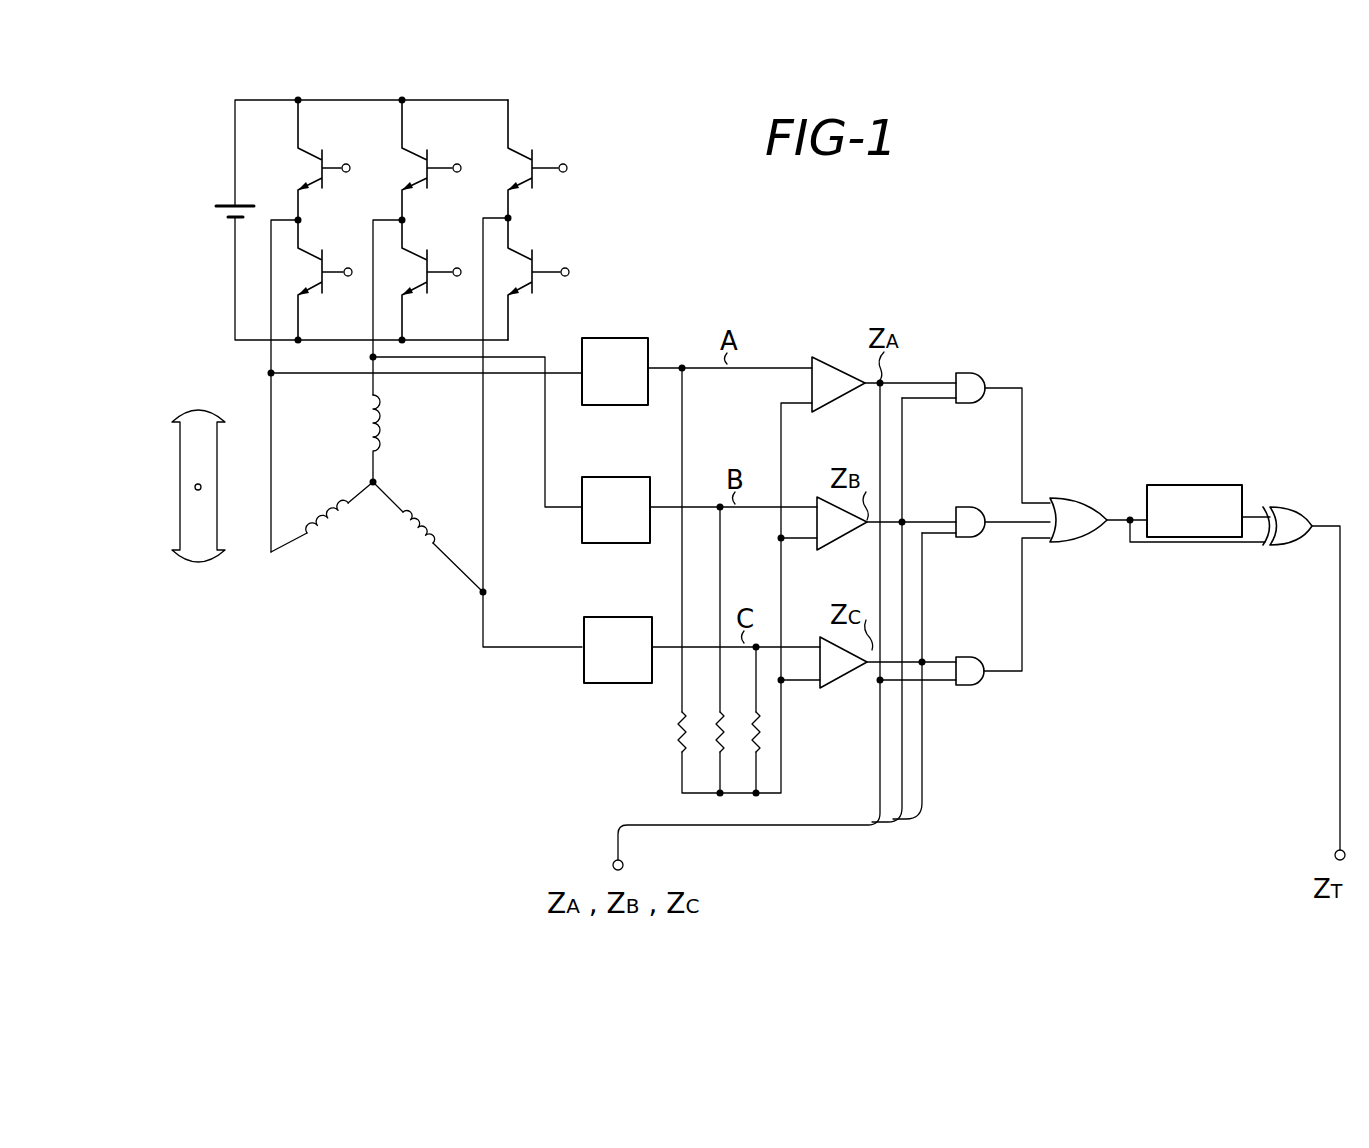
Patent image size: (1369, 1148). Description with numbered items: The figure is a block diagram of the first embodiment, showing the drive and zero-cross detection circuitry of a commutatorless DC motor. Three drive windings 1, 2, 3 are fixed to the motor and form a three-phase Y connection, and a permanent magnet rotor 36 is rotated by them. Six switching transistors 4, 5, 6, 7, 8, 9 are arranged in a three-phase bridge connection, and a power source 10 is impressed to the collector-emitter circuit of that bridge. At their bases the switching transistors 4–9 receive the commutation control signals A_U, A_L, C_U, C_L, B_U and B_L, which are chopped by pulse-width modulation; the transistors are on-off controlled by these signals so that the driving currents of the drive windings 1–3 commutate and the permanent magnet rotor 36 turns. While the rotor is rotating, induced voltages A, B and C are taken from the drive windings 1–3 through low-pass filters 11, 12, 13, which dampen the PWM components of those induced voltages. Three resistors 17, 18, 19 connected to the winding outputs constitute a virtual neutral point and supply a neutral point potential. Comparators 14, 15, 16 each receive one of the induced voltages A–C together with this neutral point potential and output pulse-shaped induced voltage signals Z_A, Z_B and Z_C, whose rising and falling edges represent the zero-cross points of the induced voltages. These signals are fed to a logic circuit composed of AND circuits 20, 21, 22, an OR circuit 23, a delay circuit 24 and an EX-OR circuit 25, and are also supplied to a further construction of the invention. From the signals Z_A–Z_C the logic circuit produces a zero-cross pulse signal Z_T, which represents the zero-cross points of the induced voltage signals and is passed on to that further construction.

The drive winding 1 is at (386, 432).
The drive winding 2 is at (334, 521).
The drive winding 3 is at (428, 486).
The switching transistor 4 is at (308, 169).
The switching transistor 5 is at (320, 276).
The switching transistor 6 is at (418, 168).
The switching transistor 7 is at (437, 280).
The switching transistor 8 is at (538, 177).
The switching transistor 9 is at (538, 277).
The power source 10 is at (226, 212).
The low-pass filter 11 is at (636, 338).
The low-pass filter 12 is at (616, 477).
The low-pass filter 13 is at (608, 617).
The comparator 14 is at (813, 357).
The comparator 15 is at (822, 495).
The comparator 16 is at (822, 636).
The resistor 17 is at (712, 740).
The resistor 18 is at (676, 730).
The resistor 19 is at (763, 730).
The AND circuit 20 is at (966, 373).
The AND circuit 21 is at (966, 507).
The AND circuit 22 is at (968, 657).
The OR circuit 23 is at (1068, 498).
The delay circuit 24 is at (1183, 485).
The EX-OR circuit 25 is at (1287, 545).
The permanent magnet rotor 36 is at (180, 455).